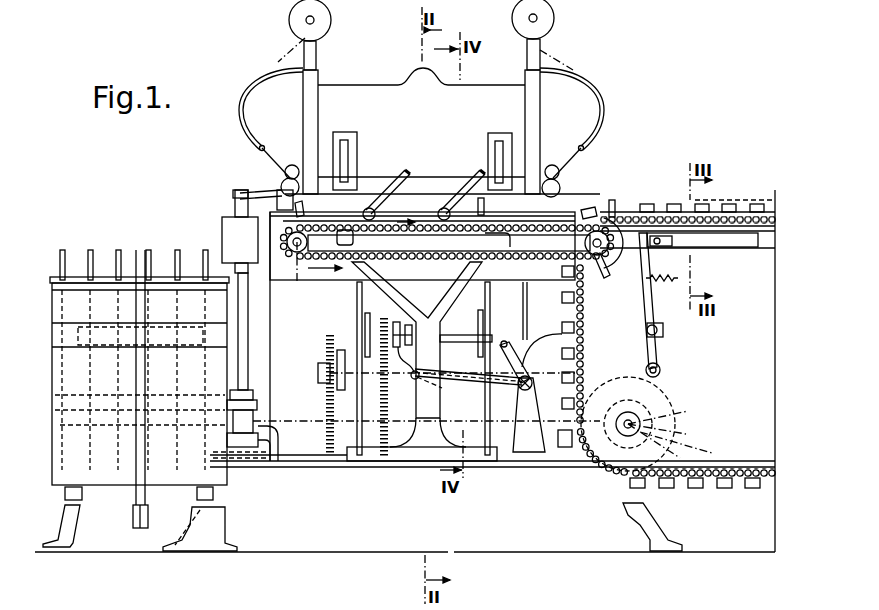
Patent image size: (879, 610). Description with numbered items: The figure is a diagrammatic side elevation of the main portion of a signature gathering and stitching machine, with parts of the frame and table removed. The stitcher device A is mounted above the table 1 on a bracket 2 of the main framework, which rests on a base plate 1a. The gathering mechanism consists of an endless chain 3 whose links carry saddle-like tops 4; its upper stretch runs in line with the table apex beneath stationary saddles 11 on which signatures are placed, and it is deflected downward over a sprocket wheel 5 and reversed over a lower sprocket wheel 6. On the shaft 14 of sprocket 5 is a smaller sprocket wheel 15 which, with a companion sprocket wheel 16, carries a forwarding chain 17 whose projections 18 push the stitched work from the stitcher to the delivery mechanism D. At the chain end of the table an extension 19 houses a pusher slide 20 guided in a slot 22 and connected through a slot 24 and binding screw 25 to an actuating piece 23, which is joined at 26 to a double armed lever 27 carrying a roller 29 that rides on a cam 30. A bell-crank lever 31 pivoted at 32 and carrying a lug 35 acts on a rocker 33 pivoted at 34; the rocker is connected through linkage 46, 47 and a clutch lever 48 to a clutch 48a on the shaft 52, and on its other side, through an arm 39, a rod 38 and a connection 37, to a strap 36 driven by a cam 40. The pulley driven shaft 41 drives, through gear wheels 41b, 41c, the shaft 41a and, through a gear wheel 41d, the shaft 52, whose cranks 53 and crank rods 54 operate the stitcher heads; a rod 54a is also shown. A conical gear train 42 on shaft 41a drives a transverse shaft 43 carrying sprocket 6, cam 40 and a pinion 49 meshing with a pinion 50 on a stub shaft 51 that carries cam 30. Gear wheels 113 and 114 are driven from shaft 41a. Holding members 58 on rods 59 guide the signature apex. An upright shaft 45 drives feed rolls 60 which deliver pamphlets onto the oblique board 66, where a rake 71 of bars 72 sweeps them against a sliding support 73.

The table 1 is at (262, 196).
The base plate 1a is at (432, 452).
The bracket 2 is at (422, 234).
The endless conveyor or chain 3 is at (604, 310).
The saddle like tops 4 is at (645, 205).
The sprocket wheel 5 is at (606, 266).
The lower sprocket wheel 6 is at (641, 424).
The stationary saddle shaped signature support 11 is at (745, 200).
The shaft 14 is at (589, 207).
The smaller sprocket wheel 15 is at (616, 204).
The companion sprocket wheel 16 is at (300, 268).
The endless link chain 17 is at (418, 258).
The projections 18 is at (304, 210).
The extension 19 is at (740, 241).
The pusher slide 20 is at (656, 211).
The slot 22 is at (705, 241).
The actuating piece 23 is at (680, 241).
The slot 24 is at (666, 247).
The binding screw 25 is at (690, 211).
The connection 26 is at (610, 256).
The double armed lever 27 is at (647, 306).
The roller 29 is at (661, 369).
The cam 30 is at (646, 332).
The lever 31 is at (486, 208).
The pivot 32 is at (447, 242).
The rocker 33 is at (524, 318).
The pivot 34 is at (533, 392).
The lug 35 is at (505, 290).
The strap 36 is at (669, 447).
The connection 37 is at (558, 441).
The rod 38 is at (607, 332).
The arm 39 is at (542, 350).
The cam 40 is at (623, 420).
The pulley driven shaft 41 is at (452, 369).
The shaft 41a is at (296, 418).
The gear wheel 41b is at (374, 372).
The gear wheel 41c is at (428, 434).
The gear wheel 41d is at (383, 316).
The conical gear train 42 is at (598, 470).
The transverse shaft 43 is at (692, 386).
The upright shaft 45 is at (248, 326).
The linkage 46 is at (505, 341).
The linkage 47 is at (444, 386).
The clutch lever 48 is at (399, 382).
The clutch 48a is at (408, 318).
The pinion 49 is at (648, 470).
The pinion 50 is at (656, 338).
The stub shaft 51 is at (661, 372).
The shaft 52 is at (462, 335).
The crank 53 is at (366, 342).
The crank rod 54 is at (480, 368).
The vertical rod 54a is at (357, 297).
The holding members 58 is at (366, 205).
The rods 59 is at (374, 204).
The feed rolls 60 is at (238, 233).
The oblique delivery board 66 is at (139, 377).
The rake 71 is at (56, 410).
The bars 72 is at (64, 252).
The sliding support 73 is at (53, 342).
The gear wheel 113 is at (325, 390).
The gear wheel 114 is at (325, 411).
The stitcher device A is at (421, 97).
The delivery mechanism D is at (128, 234).